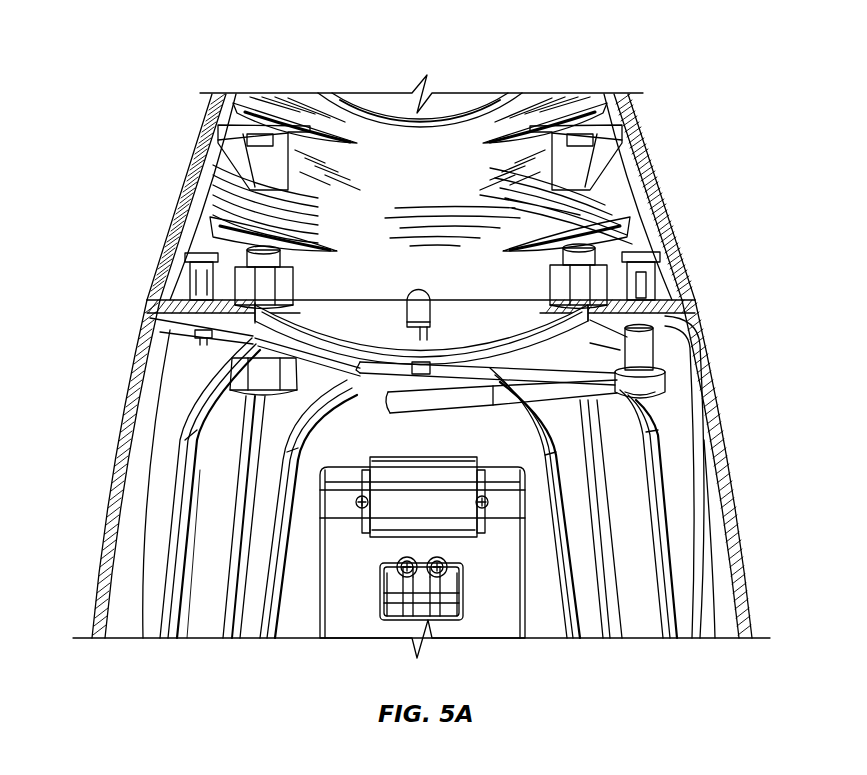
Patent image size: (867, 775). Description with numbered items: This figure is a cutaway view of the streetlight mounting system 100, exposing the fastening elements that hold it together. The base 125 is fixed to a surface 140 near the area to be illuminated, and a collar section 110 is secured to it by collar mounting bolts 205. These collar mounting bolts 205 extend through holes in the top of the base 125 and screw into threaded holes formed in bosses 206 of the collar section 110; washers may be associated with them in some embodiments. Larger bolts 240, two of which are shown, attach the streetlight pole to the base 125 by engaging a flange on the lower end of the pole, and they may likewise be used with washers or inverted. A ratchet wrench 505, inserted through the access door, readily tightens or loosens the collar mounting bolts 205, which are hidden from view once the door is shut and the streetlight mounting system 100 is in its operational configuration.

The streetlight mounting system 100 is at (127, 45).
The collar section 110 is at (647, 150).
The base 125 is at (118, 448).
The surface 140 is at (620, 233).
The collar mounting bolts 205 is at (198, 336).
The bosses 206 is at (190, 258).
The bolts 240 is at (295, 292).
The ratchet wrench 505 is at (688, 378).